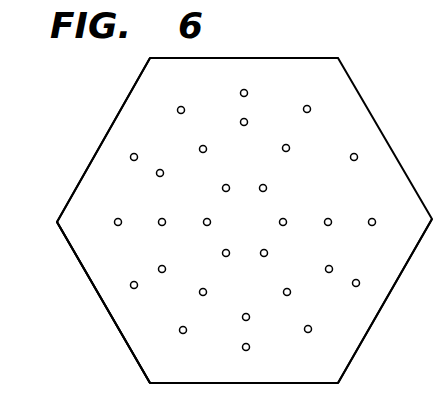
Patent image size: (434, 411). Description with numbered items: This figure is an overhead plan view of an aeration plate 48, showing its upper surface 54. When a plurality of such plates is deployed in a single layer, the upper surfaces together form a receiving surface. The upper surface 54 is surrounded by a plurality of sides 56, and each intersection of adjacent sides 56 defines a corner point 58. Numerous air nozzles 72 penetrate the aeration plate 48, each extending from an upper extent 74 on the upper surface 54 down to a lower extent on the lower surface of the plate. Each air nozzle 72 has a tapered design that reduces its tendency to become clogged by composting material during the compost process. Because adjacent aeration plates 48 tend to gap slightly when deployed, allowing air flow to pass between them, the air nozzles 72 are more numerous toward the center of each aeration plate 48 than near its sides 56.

The aeration plate 48 is at (300, 24).
The upper surface 54 is at (148, 328).
The sides 56 is at (358, 352).
The corner point 58 is at (57, 222).
The air nozzle 72 is at (131, 288).
The upper extent 74 is at (130, 157).